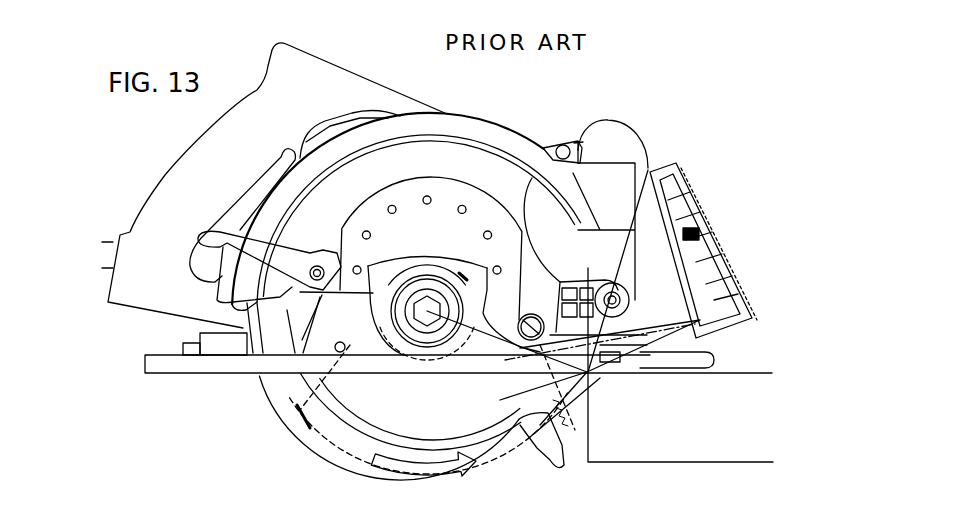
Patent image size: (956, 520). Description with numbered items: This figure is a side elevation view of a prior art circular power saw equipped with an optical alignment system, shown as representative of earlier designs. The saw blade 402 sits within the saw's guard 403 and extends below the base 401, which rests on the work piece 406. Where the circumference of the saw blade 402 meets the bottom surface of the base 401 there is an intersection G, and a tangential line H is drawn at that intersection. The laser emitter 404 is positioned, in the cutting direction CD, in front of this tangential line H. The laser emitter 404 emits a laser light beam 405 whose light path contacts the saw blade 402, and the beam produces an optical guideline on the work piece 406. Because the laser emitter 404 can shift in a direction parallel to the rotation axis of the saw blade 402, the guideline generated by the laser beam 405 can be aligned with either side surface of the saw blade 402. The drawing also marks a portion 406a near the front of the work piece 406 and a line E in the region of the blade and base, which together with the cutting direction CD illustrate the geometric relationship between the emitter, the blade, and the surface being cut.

The base 401 is at (203, 375).
The saw blade 402 is at (481, 413).
The upper blade guard (saw cover) 403 is at (458, 157).
The laser emitter 404 is at (736, 272).
The laser light beam 405 is at (602, 458).
The work piece 406 is at (733, 387).
The protruding portion of lower guard 406a is at (588, 445).
The tangential line H is at (653, 178).
The edge line E is at (551, 331).
The intersection G is at (593, 380).
The cutting direction CD is at (870, 378).